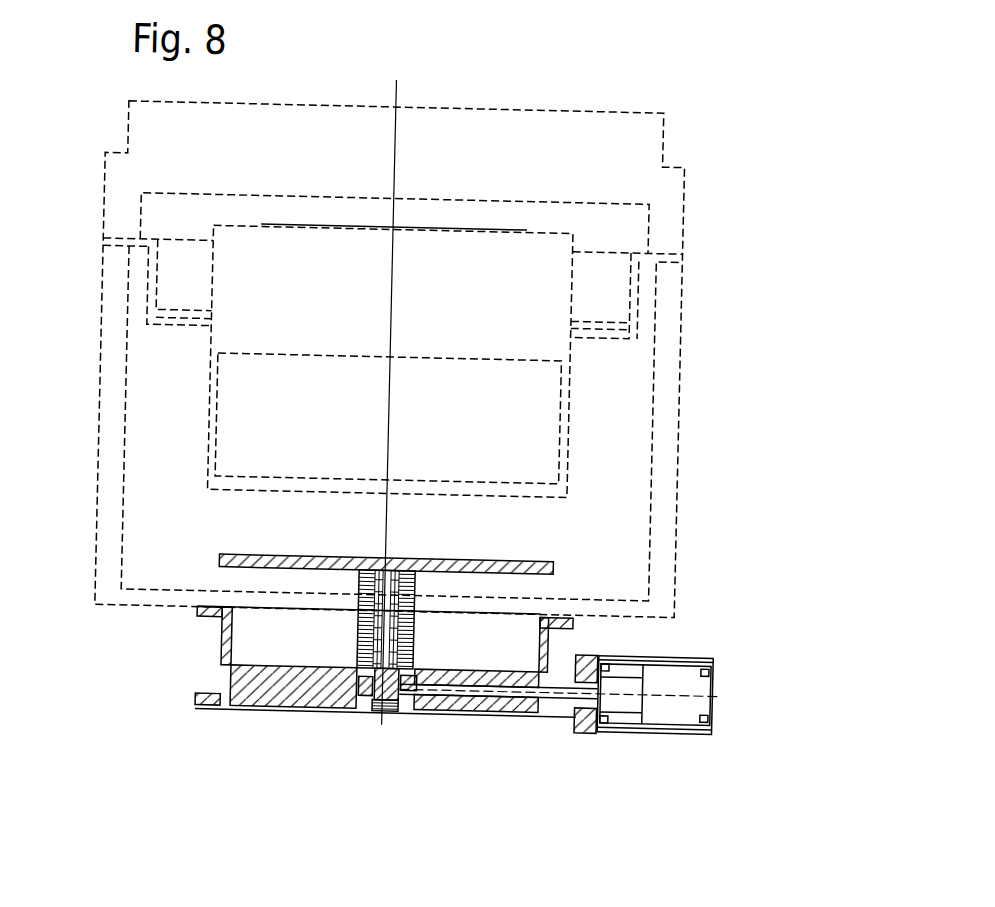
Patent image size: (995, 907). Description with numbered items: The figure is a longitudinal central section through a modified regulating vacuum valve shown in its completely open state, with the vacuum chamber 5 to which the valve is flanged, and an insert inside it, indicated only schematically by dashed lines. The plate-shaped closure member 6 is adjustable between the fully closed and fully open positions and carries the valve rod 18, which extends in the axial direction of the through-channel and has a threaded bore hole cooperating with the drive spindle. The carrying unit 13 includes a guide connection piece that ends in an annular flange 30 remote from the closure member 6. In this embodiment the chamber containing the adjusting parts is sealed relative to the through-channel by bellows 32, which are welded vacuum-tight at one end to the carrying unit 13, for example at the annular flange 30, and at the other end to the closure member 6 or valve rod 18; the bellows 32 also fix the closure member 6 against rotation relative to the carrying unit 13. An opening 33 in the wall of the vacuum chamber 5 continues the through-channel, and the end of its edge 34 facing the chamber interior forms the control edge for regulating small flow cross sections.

The vacuum chamber 5 is at (690, 385).
The closure member 6 is at (529, 557).
The carrying unit 13 is at (312, 717).
The valve rod 18 is at (370, 601).
The annular flange 30 is at (380, 684).
The bellows 32 is at (370, 637).
The opening 33 is at (248, 601).
The edge 34 is at (566, 596).